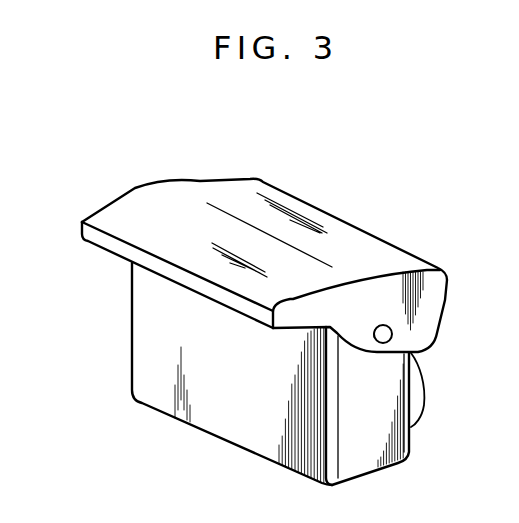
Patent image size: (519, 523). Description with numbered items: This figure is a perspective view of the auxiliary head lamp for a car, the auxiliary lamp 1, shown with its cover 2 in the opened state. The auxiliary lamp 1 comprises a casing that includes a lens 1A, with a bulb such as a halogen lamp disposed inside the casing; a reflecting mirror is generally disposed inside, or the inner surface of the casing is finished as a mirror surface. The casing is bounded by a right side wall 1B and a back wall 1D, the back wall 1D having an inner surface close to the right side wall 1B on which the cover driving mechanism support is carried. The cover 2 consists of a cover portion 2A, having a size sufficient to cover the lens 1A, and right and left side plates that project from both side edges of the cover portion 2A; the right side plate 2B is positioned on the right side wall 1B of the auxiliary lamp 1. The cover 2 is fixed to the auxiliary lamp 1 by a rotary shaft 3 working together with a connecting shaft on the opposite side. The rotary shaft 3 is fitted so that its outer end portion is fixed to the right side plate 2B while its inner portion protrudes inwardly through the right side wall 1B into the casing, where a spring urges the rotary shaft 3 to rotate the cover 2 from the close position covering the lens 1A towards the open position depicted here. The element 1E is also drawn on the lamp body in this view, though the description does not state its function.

The auxiliary lamp 1 is at (316, 381).
The lens 1A is at (226, 402).
The right side wall 1B is at (383, 394).
The back wall 1D is at (413, 364).
The projection 1E is at (425, 400).
The cover 2 is at (103, 207).
The cover portion 2A is at (302, 215).
The right side plate 2B is at (373, 288).
The rotary shaft 3 is at (391, 330).